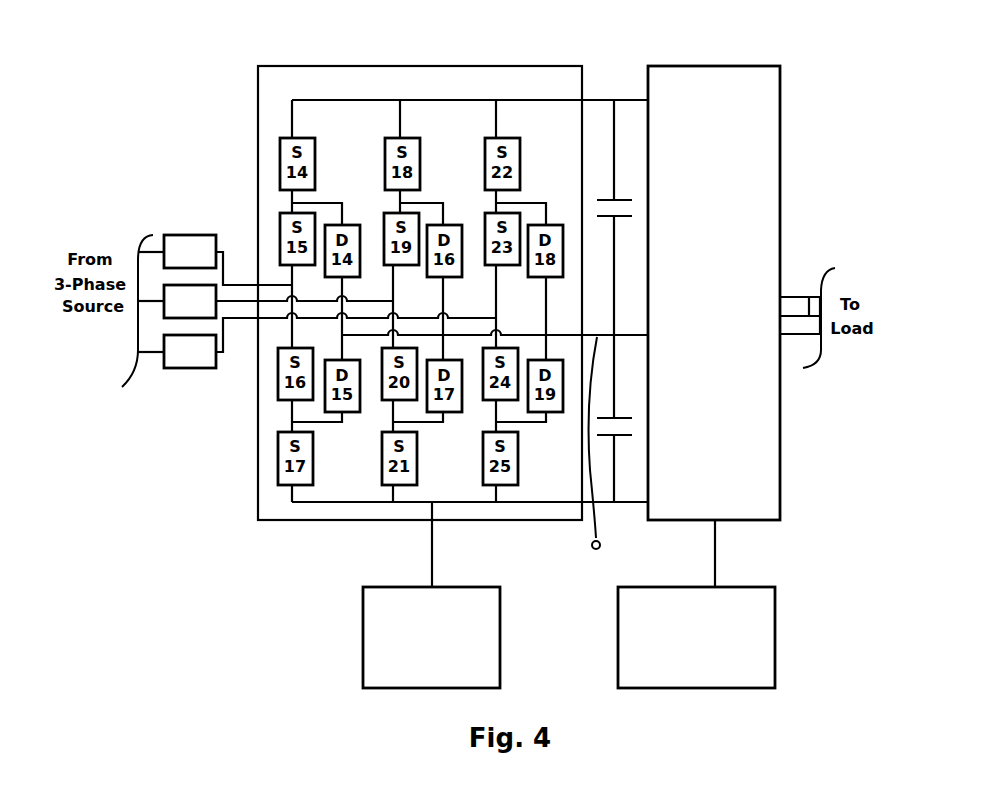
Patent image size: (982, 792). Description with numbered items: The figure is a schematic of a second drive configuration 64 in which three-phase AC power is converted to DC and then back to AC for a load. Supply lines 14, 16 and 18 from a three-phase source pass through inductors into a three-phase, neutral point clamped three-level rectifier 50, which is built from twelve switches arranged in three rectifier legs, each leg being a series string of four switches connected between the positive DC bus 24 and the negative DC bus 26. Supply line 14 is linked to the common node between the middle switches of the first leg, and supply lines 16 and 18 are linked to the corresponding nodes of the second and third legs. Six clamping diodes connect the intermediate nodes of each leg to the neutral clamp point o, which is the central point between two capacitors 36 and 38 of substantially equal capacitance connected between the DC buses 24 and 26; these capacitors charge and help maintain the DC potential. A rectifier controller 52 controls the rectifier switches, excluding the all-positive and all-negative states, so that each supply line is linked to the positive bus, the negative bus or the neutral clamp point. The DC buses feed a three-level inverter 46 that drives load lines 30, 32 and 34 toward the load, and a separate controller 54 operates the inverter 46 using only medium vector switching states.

The second drive configuration 64 is at (172, 100).
The three-level rectifier 50 is at (350, 65).
The supply line 14 is at (230, 250).
The supply line 16 is at (240, 300).
The supply line 18 is at (242, 320).
The positive DC bus 24 is at (548, 103).
The negative DC bus 26 is at (382, 503).
The capacitor 36 is at (615, 197).
The capacitor 38 is at (615, 447).
The three-level inverter 46 is at (752, 66).
The load line 30 is at (802, 300).
The load line 32 is at (810, 303).
The load line 34 is at (792, 337).
The rectifier controller 52 is at (363, 637).
The controller 54 is at (618, 632).